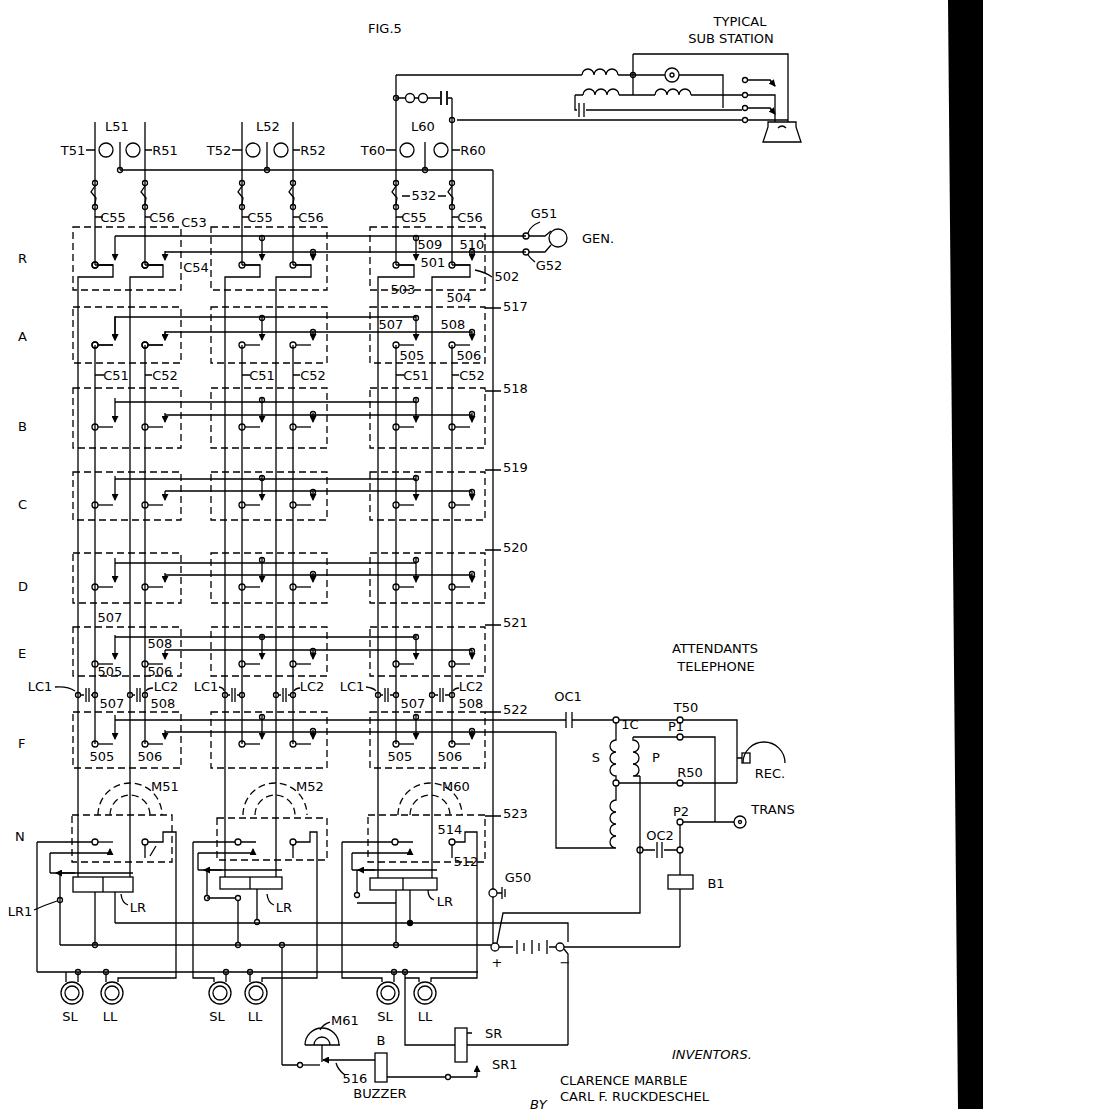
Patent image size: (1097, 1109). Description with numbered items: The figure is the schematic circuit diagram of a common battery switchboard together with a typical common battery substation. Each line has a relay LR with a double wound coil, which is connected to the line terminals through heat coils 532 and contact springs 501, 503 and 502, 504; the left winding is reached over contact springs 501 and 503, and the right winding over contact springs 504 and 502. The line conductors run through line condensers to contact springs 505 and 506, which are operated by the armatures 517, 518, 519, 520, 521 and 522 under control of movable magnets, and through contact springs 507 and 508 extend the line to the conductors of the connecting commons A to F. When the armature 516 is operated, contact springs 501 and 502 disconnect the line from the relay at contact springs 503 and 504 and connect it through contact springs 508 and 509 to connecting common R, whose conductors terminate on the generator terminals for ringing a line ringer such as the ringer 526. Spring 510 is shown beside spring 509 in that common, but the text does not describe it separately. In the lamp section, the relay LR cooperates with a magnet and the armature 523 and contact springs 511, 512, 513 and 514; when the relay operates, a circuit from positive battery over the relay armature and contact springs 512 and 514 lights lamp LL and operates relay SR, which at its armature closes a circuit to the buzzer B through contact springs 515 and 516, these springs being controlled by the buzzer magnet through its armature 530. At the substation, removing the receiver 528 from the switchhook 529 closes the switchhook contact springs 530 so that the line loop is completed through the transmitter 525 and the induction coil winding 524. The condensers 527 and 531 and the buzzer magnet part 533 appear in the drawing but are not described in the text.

The contact spring 501 is at (115, 264).
The contact spring 502 is at (166, 264).
The contact spring 503 is at (97, 569).
The contact spring 504 is at (148, 569).
The contact spring 505 is at (108, 352).
The contact spring 506 is at (157, 352).
The contact spring 507 is at (100, 328).
The contact spring 508 is at (150, 328).
The contact spring 509 is at (320, 244).
The generator bus 510 is at (335, 244).
The contact spring 511 is at (81, 837).
The contact spring 512 is at (159, 862).
The contact spring 513 is at (64, 834).
The contact spring 514 is at (147, 902).
The contact spring 515 is at (300, 1069).
The armature 516 is at (73, 228).
The armature 517 is at (73, 311).
The armature 518 is at (73, 393).
The armature 519 is at (73, 477).
The armature 520 is at (73, 558).
The armature 521 is at (73, 632).
The armature 522 is at (73, 717).
The armature 523 is at (72, 818).
The induction coil winding 524 is at (606, 72).
The transmitter 525 is at (658, 74).
The ringer 526 is at (432, 92).
The condenser 527 is at (452, 92).
The receiver 528 is at (796, 143).
The switchhook 529 is at (752, 125).
The contact springs 530 is at (741, 124).
The condenser 531 is at (575, 113).
The heat coil 532 is at (99, 196).
The buzzer magnet armature 533 is at (321, 1053).